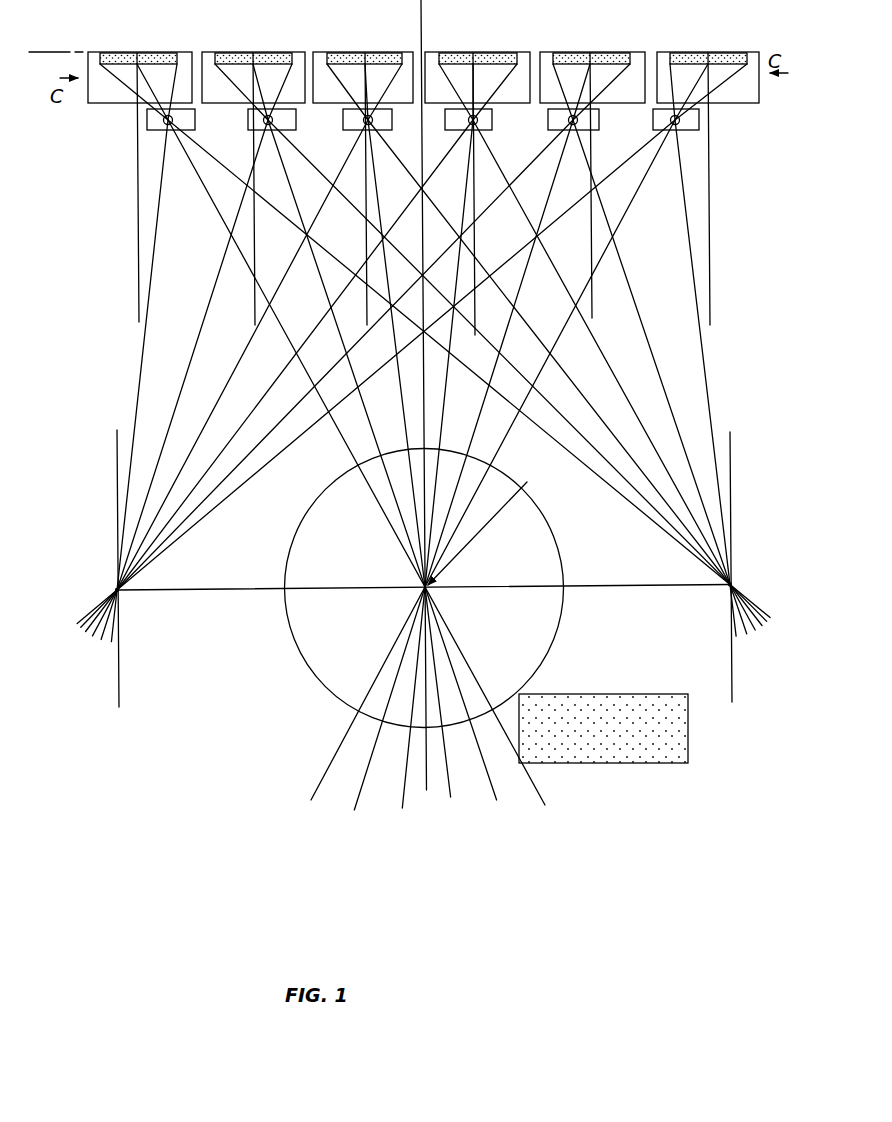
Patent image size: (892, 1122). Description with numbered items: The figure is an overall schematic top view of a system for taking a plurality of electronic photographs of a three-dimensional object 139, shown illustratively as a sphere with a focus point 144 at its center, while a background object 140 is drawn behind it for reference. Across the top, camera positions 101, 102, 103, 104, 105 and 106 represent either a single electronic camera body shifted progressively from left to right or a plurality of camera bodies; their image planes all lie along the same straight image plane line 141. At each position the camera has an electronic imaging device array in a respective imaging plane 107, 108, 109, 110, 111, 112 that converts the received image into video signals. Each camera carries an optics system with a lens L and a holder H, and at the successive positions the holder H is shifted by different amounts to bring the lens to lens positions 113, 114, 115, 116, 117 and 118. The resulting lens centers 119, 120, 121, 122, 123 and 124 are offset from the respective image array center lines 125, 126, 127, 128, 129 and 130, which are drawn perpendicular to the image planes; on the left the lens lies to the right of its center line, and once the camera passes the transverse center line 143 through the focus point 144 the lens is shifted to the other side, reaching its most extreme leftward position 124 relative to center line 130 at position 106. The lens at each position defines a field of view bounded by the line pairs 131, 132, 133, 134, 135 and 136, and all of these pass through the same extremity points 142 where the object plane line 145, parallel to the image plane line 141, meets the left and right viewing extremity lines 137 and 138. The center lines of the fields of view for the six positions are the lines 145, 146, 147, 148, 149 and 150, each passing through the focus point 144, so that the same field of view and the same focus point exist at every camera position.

The camera position 101 is at (90, 52).
The camera position 102 is at (204, 52).
The camera position 103 is at (318, 52).
The camera position 104 is at (430, 52).
The camera position 105 is at (545, 52).
The camera position 106 is at (660, 52).
The imaging plane 107 is at (160, 53).
The imaging plane 108 is at (276, 53).
The imaging plane 109 is at (381, 53).
The imaging plane 110 is at (494, 53).
The imaging plane 111 is at (602, 53).
The imaging plane 112 is at (730, 53).
The lens position 113 is at (147, 122).
The lens position 114 is at (248, 124).
The lens position 115 is at (343, 124).
The lens position 116 is at (492, 122).
The lens position 117 is at (599, 122).
The lens position 118 is at (699, 117).
The lens center 119 is at (164, 125).
The lens center 120 is at (264, 124).
The lens center 121 is at (364, 124).
The lens center 122 is at (469, 121).
The lens center 123 is at (569, 121).
The lens center 124 is at (671, 121).
The image array center line 125 is at (138, 302).
The image array center line 126 is at (254, 305).
The image array center line 127 is at (366, 320).
The image array center line 128 is at (480, 306).
The image array center line 129 is at (592, 300).
The image array center line 130 is at (710, 287).
The field of view extremity line pair 131 is at (142, 355).
The field of view extremity line pair 132 is at (194, 358).
The field of view extremity line pair 133 is at (246, 357).
The field of view extremity line pair 134 is at (282, 376).
The field of view extremity line pair 135 is at (310, 393).
The field of view extremity line pair 136 is at (290, 440).
The left viewing extremity line 137 is at (116, 432).
The right viewing extremity line 138 is at (742, 458).
The three-dimensional object 139 is at (303, 661).
The background object 140 is at (689, 748).
The image plane line 141 is at (55, 50).
The extremity points 142 is at (114, 588).
The center line 143 is at (426, 790).
The focus point 144 is at (493, 520).
The object plane line 145 is at (214, 207).
The field of view center line 146 is at (296, 200).
The field of view center line 147 is at (382, 204).
The field of view center line 148 is at (468, 189).
The field of view center line 149 is at (548, 196).
The field of view center line 150 is at (638, 190).
The holder H is at (690, 127).
The lens L is at (683, 126).